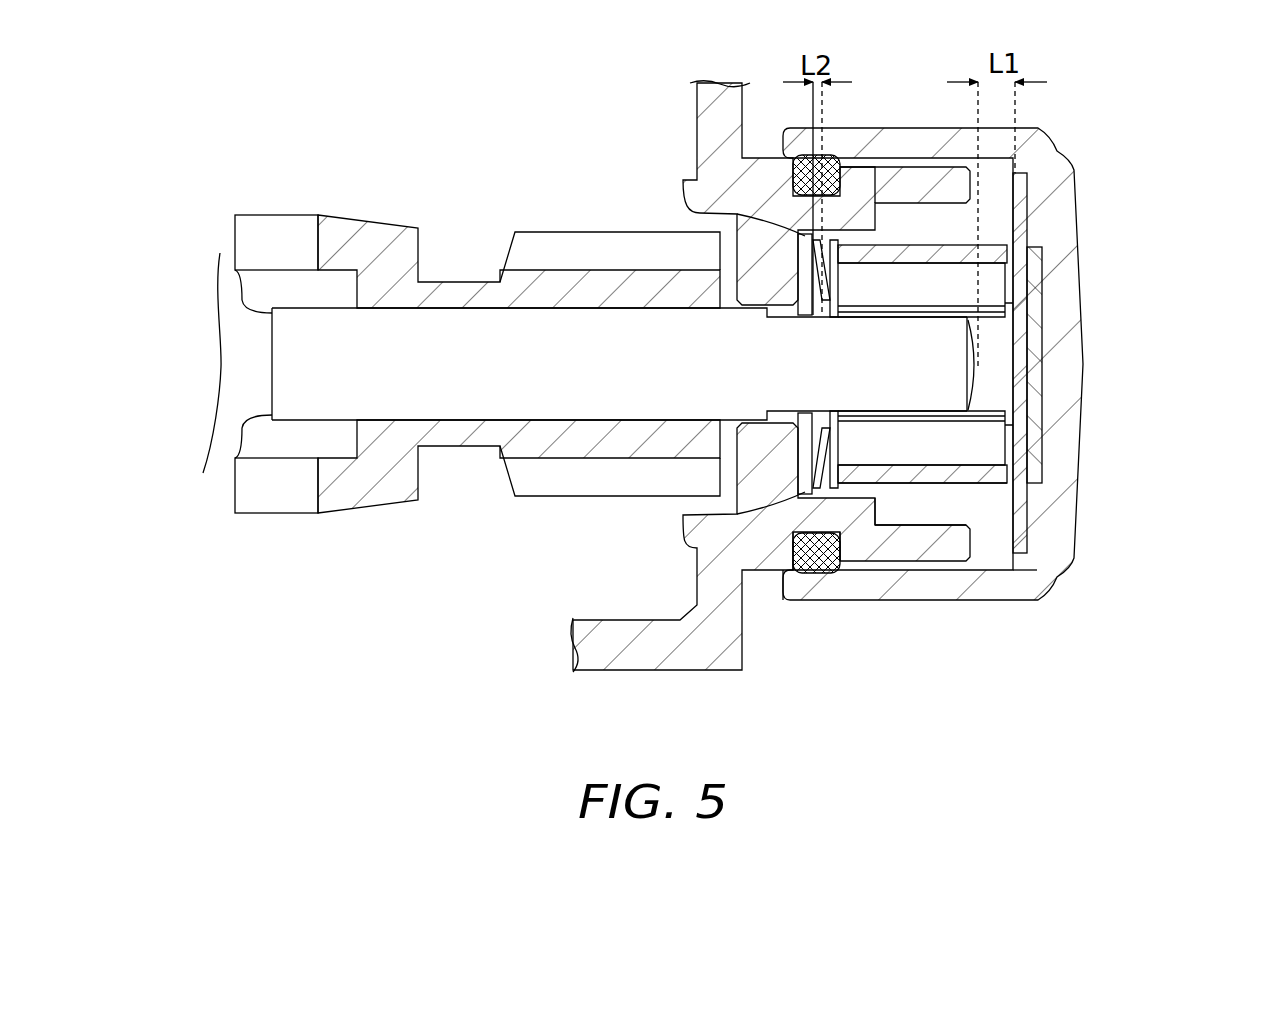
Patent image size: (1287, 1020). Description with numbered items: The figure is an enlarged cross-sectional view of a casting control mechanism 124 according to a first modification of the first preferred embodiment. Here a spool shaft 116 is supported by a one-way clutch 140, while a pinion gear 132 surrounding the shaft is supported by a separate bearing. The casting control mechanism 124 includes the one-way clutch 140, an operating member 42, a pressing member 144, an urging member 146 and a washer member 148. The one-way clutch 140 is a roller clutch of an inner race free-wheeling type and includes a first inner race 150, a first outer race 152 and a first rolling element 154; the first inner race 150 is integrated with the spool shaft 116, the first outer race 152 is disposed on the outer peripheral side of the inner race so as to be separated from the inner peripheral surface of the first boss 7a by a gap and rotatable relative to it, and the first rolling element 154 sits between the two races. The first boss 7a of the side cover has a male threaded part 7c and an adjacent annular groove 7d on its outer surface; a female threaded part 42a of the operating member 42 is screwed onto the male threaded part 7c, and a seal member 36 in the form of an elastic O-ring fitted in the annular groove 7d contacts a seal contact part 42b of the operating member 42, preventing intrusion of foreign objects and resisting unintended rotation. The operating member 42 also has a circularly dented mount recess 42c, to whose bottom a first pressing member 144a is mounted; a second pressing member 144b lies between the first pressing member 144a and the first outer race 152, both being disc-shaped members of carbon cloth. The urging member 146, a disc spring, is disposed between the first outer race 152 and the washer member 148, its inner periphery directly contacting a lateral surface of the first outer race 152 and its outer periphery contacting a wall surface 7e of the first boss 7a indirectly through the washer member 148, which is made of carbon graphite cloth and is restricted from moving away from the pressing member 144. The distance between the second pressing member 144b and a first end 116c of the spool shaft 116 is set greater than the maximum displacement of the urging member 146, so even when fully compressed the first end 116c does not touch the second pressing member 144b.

The first boss 7a is at (836, 575).
The male threaded part 7c is at (917, 522).
The annular groove 7d is at (845, 590).
The wall surface 7e is at (692, 217).
The seal member 36 is at (828, 580).
The operating member 42 is at (1085, 510).
The female threaded part 42a is at (922, 413).
The seal contact part 42b is at (790, 578).
The mount recess 42c is at (980, 367).
The spool shaft 116 is at (550, 397).
The first end 116c is at (990, 438).
The casting control mechanism 124 is at (860, 580).
The pinion gear 132 is at (375, 218).
The one-way clutch 140 is at (966, 498).
The pressing member 144 is at (1183, 215).
The first pressing member 144a is at (1020, 320).
The second pressing member 144b is at (1023, 230).
The urging member 146 is at (805, 562).
The washer member 148 is at (760, 530).
The first inner race 150 is at (922, 413).
The first outer race 152 is at (855, 230).
The first rolling element 154 is at (927, 280).